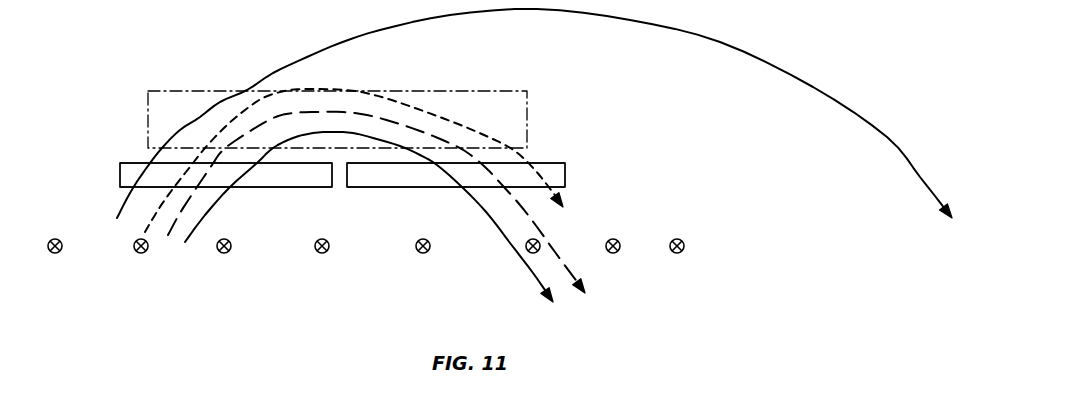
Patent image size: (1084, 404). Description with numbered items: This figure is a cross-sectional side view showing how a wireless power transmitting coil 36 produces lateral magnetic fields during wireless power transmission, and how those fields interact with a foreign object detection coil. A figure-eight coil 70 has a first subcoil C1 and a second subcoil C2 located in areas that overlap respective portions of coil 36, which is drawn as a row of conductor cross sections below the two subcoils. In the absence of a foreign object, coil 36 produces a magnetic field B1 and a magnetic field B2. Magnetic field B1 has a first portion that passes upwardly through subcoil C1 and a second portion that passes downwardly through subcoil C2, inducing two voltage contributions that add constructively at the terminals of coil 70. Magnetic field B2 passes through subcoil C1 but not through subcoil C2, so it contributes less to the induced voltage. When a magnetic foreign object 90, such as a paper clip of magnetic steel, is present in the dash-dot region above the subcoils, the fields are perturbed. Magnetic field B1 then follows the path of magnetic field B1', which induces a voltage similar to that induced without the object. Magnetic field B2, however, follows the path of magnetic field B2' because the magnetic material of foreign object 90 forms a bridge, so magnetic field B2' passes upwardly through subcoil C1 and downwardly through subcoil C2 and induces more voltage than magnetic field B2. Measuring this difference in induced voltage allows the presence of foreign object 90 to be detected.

The figure-eight coil 70 is at (125, 147).
The foreign object 90 is at (172, 90).
The coil 36 is at (223, 253).
The first subcoil C1 is at (120, 172).
The second subcoil C2 is at (565, 180).
The magnetic field B1 is at (369, 217).
The magnetic field B2 is at (534, 113).
The magnetic field B1' is at (392, 202).
The magnetic field B2' is at (370, 160).